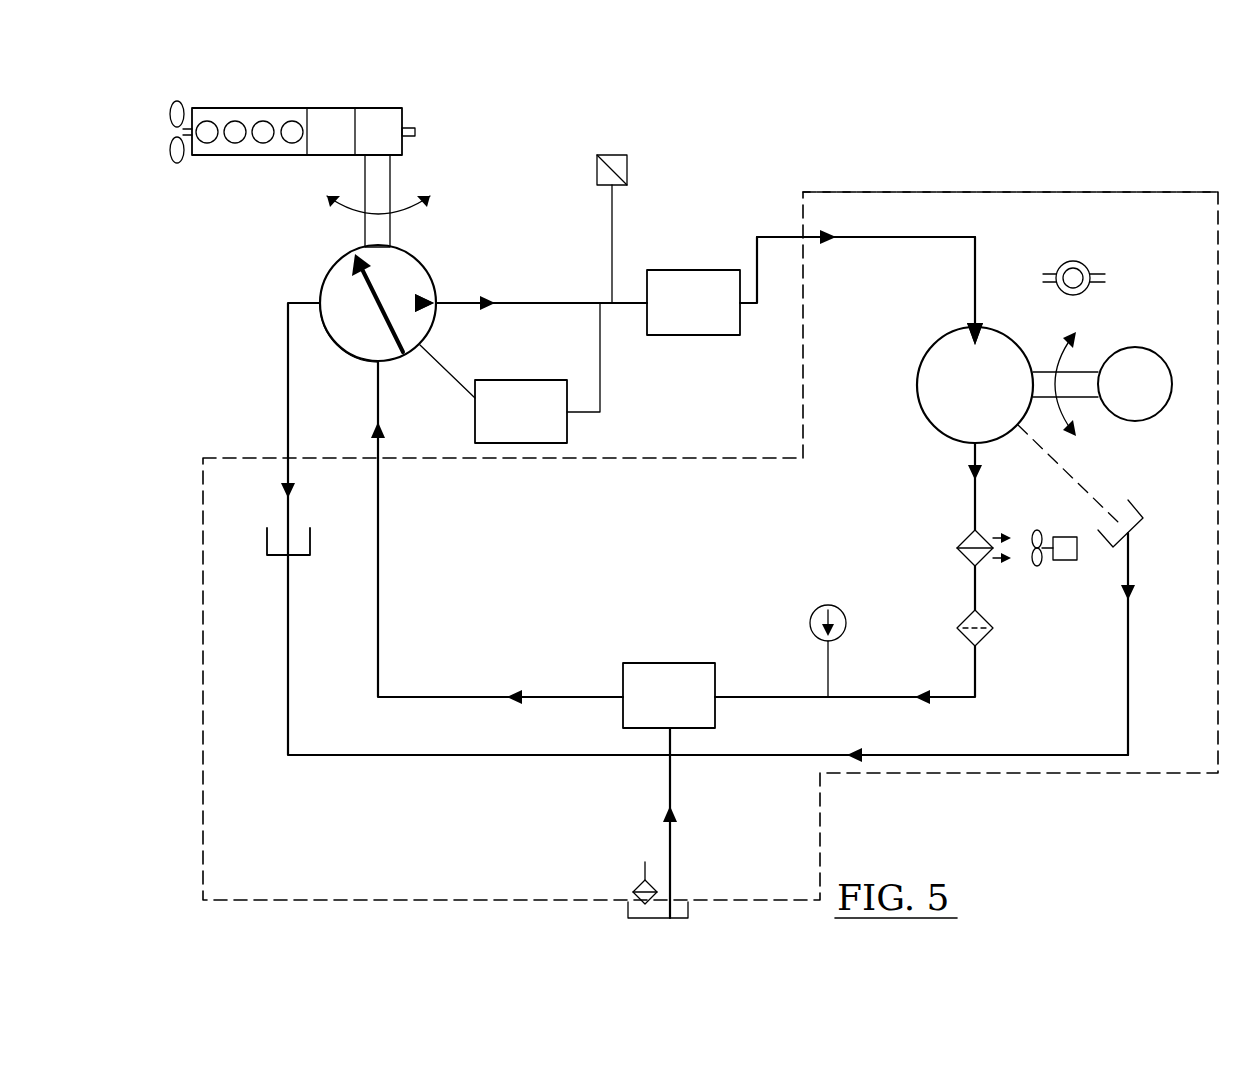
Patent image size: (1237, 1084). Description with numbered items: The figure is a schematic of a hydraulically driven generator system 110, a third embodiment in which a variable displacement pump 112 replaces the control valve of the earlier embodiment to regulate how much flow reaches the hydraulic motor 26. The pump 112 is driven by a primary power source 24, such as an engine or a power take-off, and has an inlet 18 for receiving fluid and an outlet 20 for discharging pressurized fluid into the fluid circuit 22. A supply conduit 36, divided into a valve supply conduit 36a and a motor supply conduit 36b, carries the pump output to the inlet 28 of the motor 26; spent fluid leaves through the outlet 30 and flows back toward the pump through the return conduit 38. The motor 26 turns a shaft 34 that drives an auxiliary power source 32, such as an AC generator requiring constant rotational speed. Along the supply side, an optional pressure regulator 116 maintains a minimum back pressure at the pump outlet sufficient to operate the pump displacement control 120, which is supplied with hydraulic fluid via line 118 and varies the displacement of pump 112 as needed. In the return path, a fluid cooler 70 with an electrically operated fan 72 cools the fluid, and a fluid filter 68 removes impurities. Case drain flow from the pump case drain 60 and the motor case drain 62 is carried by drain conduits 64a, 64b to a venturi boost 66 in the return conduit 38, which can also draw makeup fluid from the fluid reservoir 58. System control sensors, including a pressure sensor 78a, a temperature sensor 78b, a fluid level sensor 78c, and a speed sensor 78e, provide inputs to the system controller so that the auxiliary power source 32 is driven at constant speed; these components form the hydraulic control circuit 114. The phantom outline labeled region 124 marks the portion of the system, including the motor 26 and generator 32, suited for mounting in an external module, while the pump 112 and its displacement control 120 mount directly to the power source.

The inlet 18 is at (380, 366).
The outlet 20 is at (440, 306).
The fluid circuit 22 is at (425, 620).
The primary power source 24 is at (405, 112).
The hydraulic motor 26 is at (918, 360).
The inlet 28 is at (972, 322).
The outlet 30 is at (973, 445).
The auxiliary power source 32 is at (1140, 348).
The shaft 34 is at (1085, 398).
The supply conduit 36 is at (497, 298).
The valve supply conduit 36a is at (543, 306).
The motor supply conduit 36b is at (907, 236).
The return conduit 38 is at (975, 585).
The fluid reservoir 58 is at (670, 845).
The pump case drain 60 is at (267, 540).
The motor case drain 62 is at (1133, 507).
The drain conduit 64a is at (288, 637).
The drain conduit 64b is at (1130, 630).
The venturi boost 66 is at (672, 663).
The fluid filter 68 is at (993, 633).
The fluid cooler 70 is at (957, 545).
The fan 72 is at (1065, 561).
The pressure sensor 78a is at (597, 165).
The temperature sensor 78b is at (810, 617).
The fluid level sensor 78c is at (633, 892).
The speed sensor 78e is at (1080, 262).
The hydraulically driven generator system 110 is at (1030, 181).
The variable displacement pump 112 is at (333, 275).
The hydraulic control circuit 114 is at (728, 530).
The pressure regulator 116 is at (672, 270).
The line 118 is at (600, 372).
The pump displacement control 120 is at (567, 425).
The region 124 is at (1165, 191).